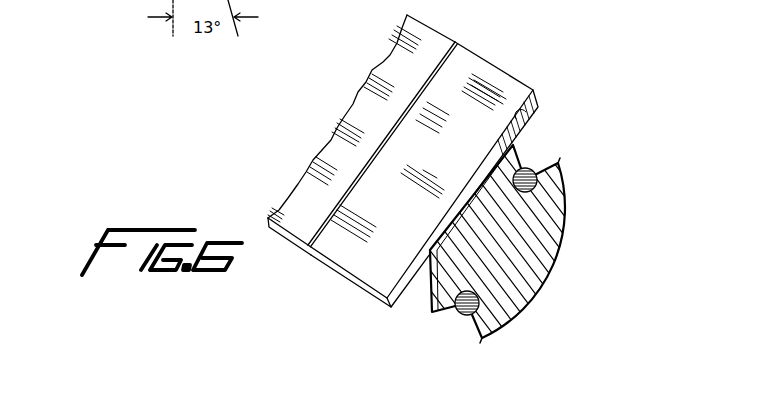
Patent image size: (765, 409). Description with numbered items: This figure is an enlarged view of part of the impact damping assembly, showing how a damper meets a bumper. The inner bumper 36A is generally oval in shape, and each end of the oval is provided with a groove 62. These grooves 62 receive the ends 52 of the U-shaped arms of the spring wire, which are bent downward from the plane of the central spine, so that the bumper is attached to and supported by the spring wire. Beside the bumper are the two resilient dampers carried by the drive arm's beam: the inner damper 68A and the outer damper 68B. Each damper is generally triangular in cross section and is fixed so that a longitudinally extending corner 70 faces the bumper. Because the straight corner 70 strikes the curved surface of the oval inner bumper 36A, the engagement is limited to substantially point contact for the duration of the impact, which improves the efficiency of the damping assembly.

The outer damper 68B is at (397, 70).
The inner damper 68A is at (360, 243).
The longitudinally extending corner 70 is at (497, 87).
The inner bumper 36A is at (547, 265).
The groove 62 is at (547, 165).
The ends of the U-shaped arms 52 is at (527, 168).